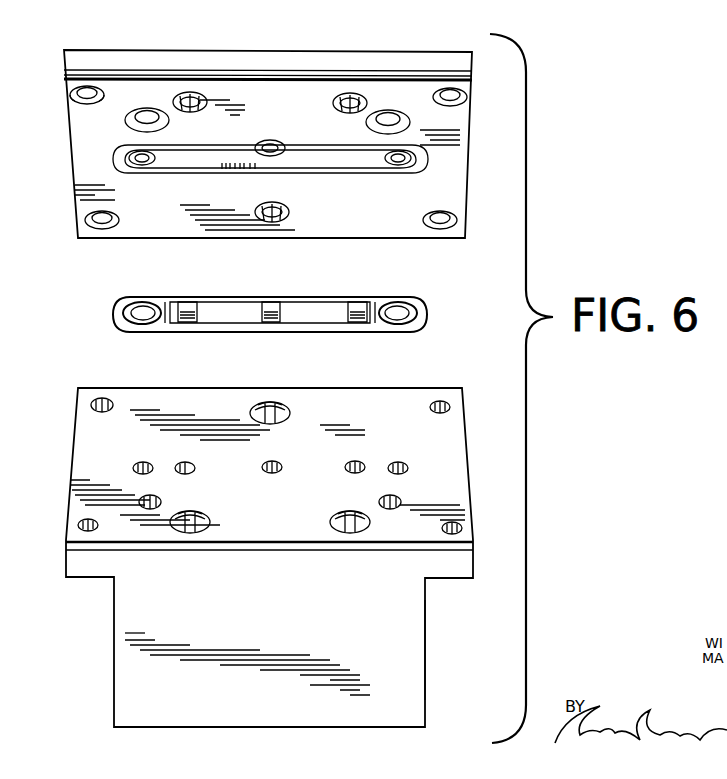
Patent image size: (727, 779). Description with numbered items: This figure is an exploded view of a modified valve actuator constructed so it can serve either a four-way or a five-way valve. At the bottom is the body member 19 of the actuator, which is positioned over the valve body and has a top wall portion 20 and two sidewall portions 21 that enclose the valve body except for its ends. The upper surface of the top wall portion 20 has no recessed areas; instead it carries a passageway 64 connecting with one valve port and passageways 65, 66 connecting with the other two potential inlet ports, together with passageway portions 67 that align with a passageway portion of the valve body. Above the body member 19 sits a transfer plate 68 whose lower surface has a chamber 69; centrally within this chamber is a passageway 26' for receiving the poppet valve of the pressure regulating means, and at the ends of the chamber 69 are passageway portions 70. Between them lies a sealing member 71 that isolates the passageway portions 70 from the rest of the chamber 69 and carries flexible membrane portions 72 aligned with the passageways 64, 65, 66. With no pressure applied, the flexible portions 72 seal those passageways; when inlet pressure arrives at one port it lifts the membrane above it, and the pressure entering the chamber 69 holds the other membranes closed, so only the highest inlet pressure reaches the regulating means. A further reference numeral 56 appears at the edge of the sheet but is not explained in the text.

The body member 19 is at (427, 648).
The top wall portion 20 is at (450, 440).
The sidewall portions 21 is at (125, 633).
The passageway 26' is at (287, 132).
The element 56 is at (138, 6).
The passageway 64 is at (274, 461).
The passageway 65 is at (187, 474).
The passageway 66 is at (357, 474).
The passageway portions 67 is at (142, 460).
The transfer plate 68 is at (402, 52).
The chamber 69 is at (320, 168).
The passageway portions 70 is at (140, 166).
The sealing member 71 is at (424, 306).
The flexible membrane portions 72 is at (270, 305).